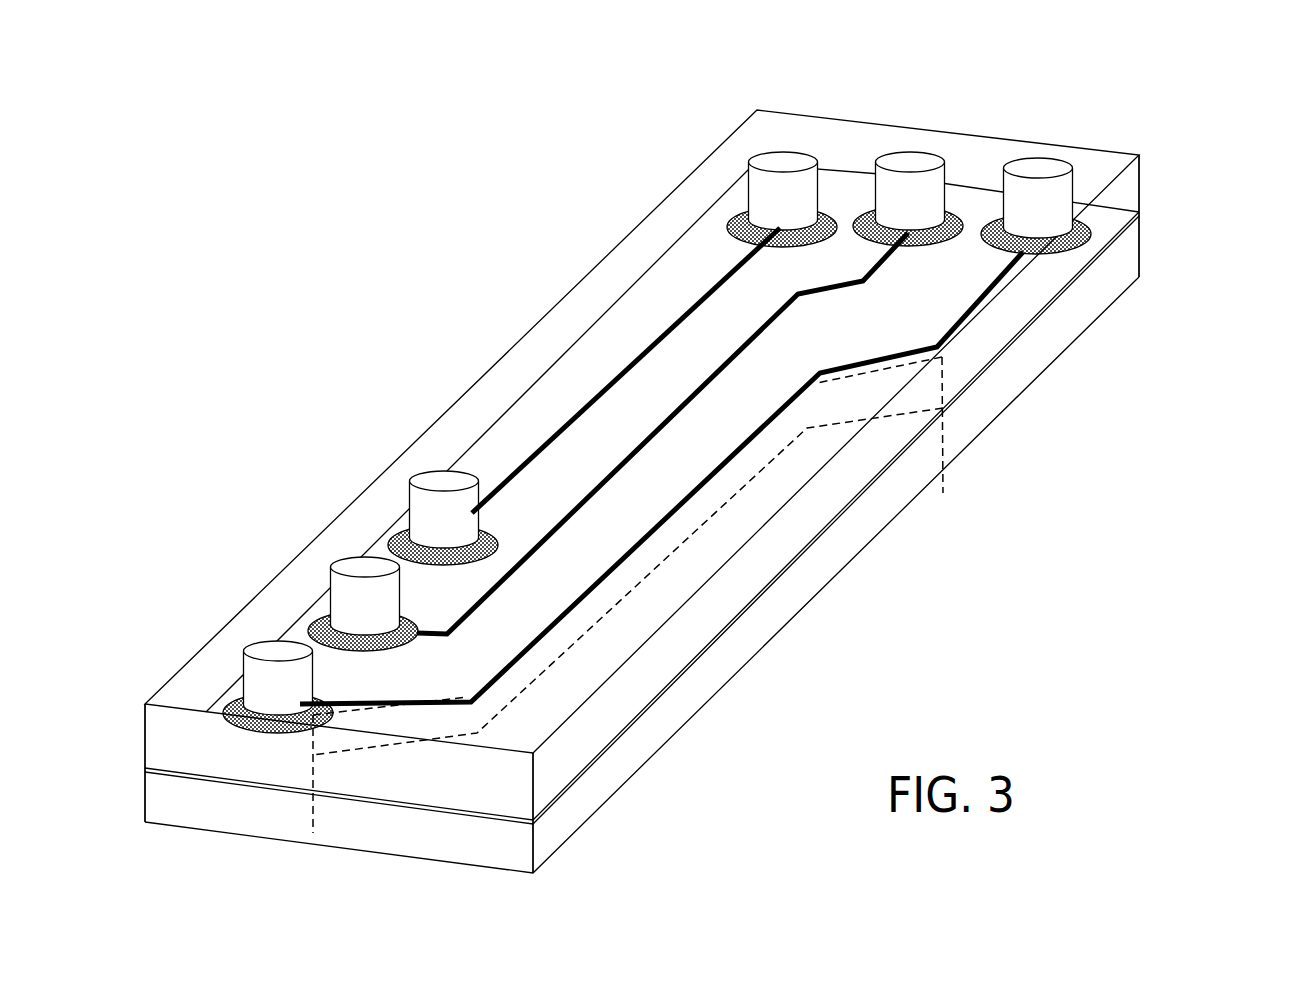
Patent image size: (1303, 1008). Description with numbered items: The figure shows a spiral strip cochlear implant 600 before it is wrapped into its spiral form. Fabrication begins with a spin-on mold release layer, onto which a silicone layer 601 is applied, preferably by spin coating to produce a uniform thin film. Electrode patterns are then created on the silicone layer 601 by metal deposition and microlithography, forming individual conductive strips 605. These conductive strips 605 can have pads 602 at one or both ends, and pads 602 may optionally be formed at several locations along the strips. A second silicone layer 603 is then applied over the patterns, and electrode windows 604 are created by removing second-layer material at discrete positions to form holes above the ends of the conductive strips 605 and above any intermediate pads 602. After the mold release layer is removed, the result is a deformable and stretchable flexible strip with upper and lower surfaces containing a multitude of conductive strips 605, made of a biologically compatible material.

The spiral strip cochlear implant 600 is at (1163, 95).
The silicone layer 601 is at (1107, 275).
The pad 602 is at (733, 227).
The second silicone layer 603 is at (800, 125).
The electrode window 604 is at (900, 168).
The conductive strip 605 is at (698, 292).